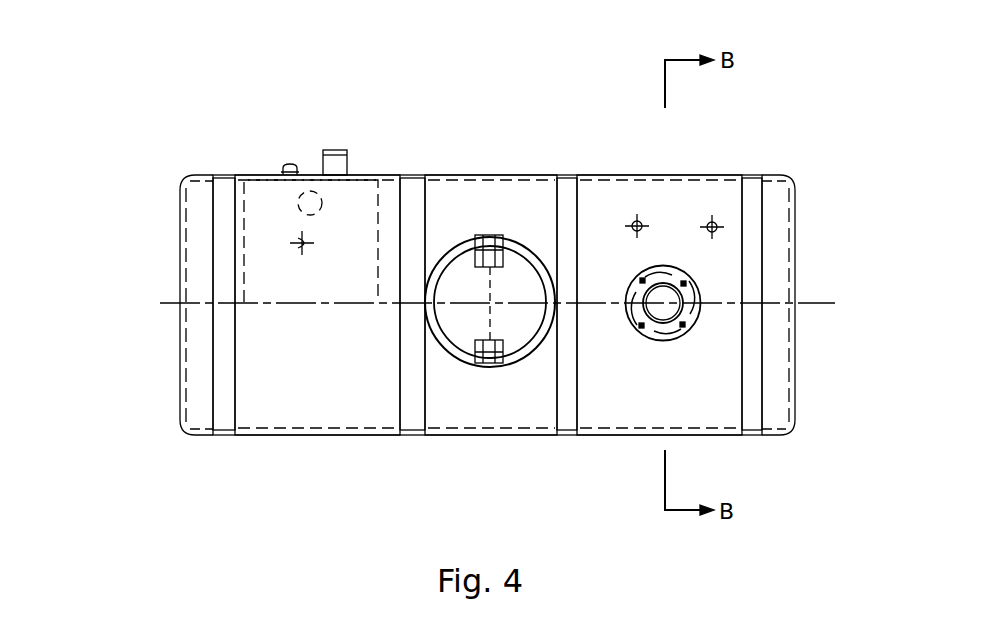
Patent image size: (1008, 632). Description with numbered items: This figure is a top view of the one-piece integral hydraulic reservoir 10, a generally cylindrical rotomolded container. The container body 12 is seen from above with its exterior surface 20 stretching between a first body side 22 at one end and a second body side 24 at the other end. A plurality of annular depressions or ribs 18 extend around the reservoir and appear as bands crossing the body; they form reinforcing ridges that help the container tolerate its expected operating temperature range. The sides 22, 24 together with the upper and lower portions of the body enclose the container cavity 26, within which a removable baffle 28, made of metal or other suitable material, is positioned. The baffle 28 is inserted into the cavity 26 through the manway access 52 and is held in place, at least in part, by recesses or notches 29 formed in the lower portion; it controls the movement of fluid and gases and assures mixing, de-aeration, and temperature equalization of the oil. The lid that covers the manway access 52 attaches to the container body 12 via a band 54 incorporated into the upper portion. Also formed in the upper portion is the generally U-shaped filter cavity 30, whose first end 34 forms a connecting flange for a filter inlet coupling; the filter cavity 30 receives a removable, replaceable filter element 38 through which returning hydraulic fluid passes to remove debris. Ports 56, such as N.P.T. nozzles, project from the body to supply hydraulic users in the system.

The hydraulic reservoir 10 is at (614, 88).
The container body 12 is at (295, 410).
The annular depressions or ribs 18 is at (226, 430).
The exterior surface 20 is at (447, 175).
The first body side 22 is at (181, 390).
The second body side 24 is at (794, 427).
The container cavity 26 is at (330, 373).
The removable baffle 28 is at (497, 313).
The recesses or notches 29 is at (503, 235).
The filter cavity 30 is at (690, 334).
The first end of filter cavity 34 is at (692, 314).
The filter element 38 is at (660, 312).
The manway access 52 is at (513, 268).
The band 54 is at (542, 258).
The ports 56 is at (290, 164).